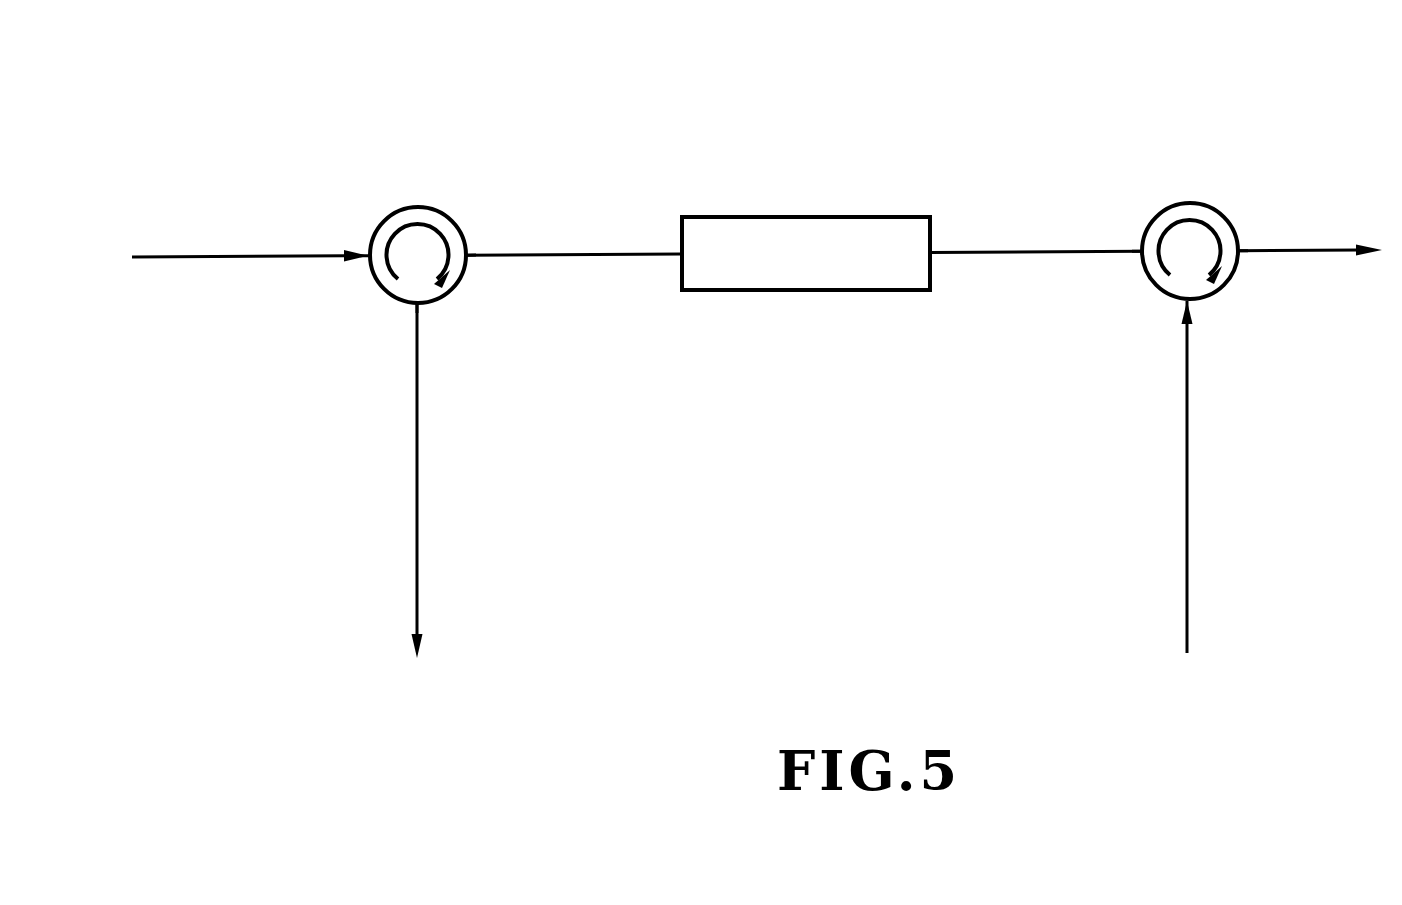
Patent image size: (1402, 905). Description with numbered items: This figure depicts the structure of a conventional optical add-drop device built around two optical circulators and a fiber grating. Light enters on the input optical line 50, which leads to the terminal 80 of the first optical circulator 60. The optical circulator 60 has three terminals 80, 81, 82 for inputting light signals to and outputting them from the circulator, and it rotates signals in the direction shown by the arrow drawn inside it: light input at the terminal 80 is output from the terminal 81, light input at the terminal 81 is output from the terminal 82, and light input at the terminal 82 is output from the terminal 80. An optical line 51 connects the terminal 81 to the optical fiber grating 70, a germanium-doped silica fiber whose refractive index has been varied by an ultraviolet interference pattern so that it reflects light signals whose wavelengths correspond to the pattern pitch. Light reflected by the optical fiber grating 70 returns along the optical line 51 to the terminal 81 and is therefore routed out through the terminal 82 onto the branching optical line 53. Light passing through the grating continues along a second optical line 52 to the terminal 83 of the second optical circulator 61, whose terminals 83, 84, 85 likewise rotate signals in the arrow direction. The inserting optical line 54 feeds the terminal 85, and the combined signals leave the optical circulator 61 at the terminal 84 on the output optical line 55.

The input optical line 50 is at (180, 256).
The optical line 51 is at (532, 255).
The optical line 52 is at (985, 251).
The branching optical line 53 is at (417, 505).
The inserting optical line 54 is at (1187, 520).
The output optical line 55 is at (1285, 250).
The optical circulator 60 is at (408, 205).
The optical circulator 61 is at (1190, 201).
The optical fiber grating 70 is at (803, 217).
The terminal 80 is at (341, 278).
The terminal 81 is at (496, 276).
The terminal 82 is at (446, 324).
The terminal 83 is at (1113, 272).
The terminal 84 is at (1268, 272).
The terminal 85 is at (1220, 320).